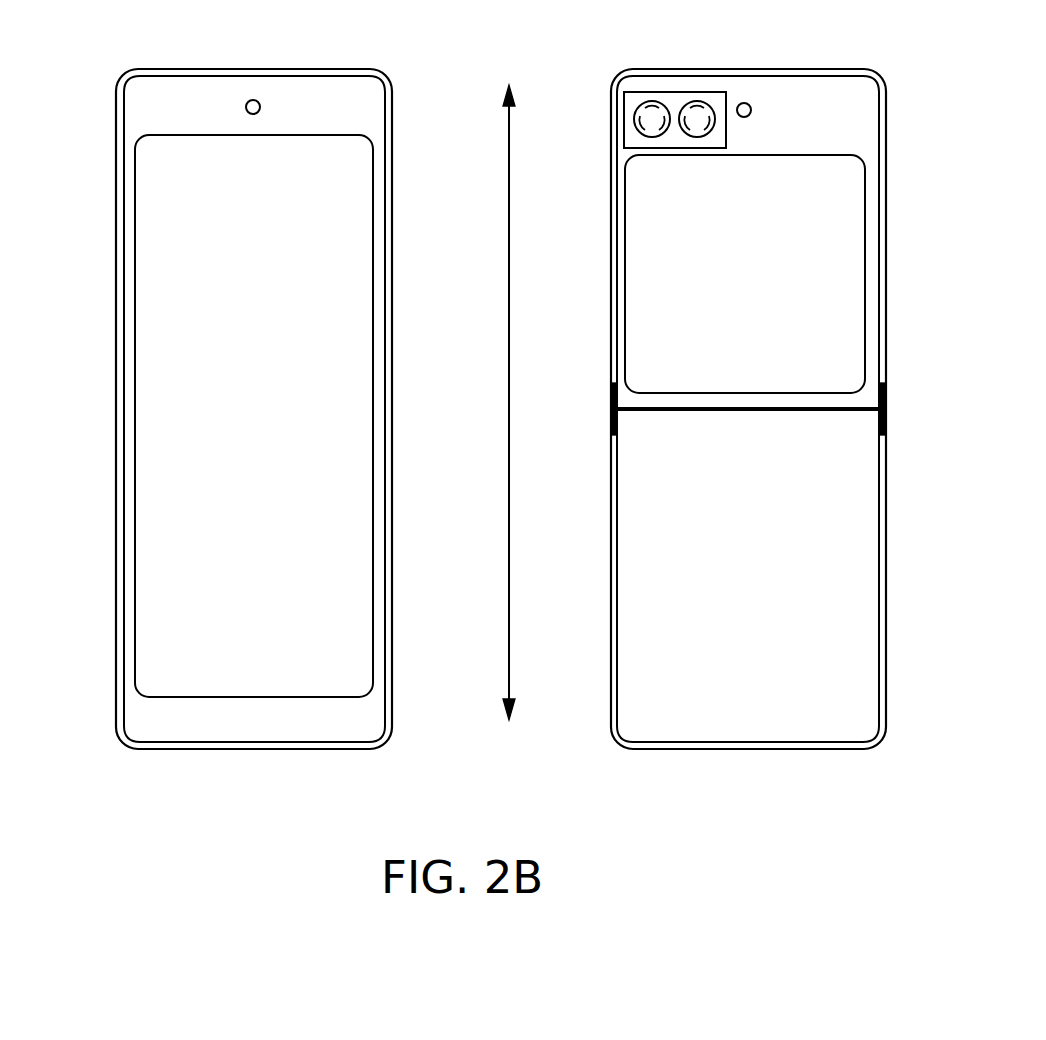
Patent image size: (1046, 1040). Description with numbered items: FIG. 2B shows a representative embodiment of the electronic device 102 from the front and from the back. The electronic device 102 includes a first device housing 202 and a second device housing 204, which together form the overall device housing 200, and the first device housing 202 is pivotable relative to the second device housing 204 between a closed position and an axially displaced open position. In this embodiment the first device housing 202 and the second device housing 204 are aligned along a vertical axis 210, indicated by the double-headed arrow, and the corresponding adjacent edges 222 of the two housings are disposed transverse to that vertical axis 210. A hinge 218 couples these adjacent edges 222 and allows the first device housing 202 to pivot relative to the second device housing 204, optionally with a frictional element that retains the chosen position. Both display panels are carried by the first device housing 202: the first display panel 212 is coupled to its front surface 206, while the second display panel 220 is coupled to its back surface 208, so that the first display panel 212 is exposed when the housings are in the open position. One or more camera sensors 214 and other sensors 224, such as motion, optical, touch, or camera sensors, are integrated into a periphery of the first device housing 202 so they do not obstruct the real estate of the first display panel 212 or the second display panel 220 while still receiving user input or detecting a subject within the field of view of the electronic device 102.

The electronic device 102 is at (104, 82).
The housing 200 is at (377, 141).
The first device housing 202 is at (383, 259).
The second device housing 204 is at (376, 513).
The front surface 206 is at (308, 105).
The back surface 208 is at (803, 108).
The vertical axis 210 is at (510, 205).
The first display panel 212 is at (254, 416).
The camera sensor 214 is at (700, 108).
The hinge 218 is at (884, 402).
The second display panel 220 is at (745, 274).
The adjacent edges 222 is at (710, 412).
The sensor 224 is at (259, 103).